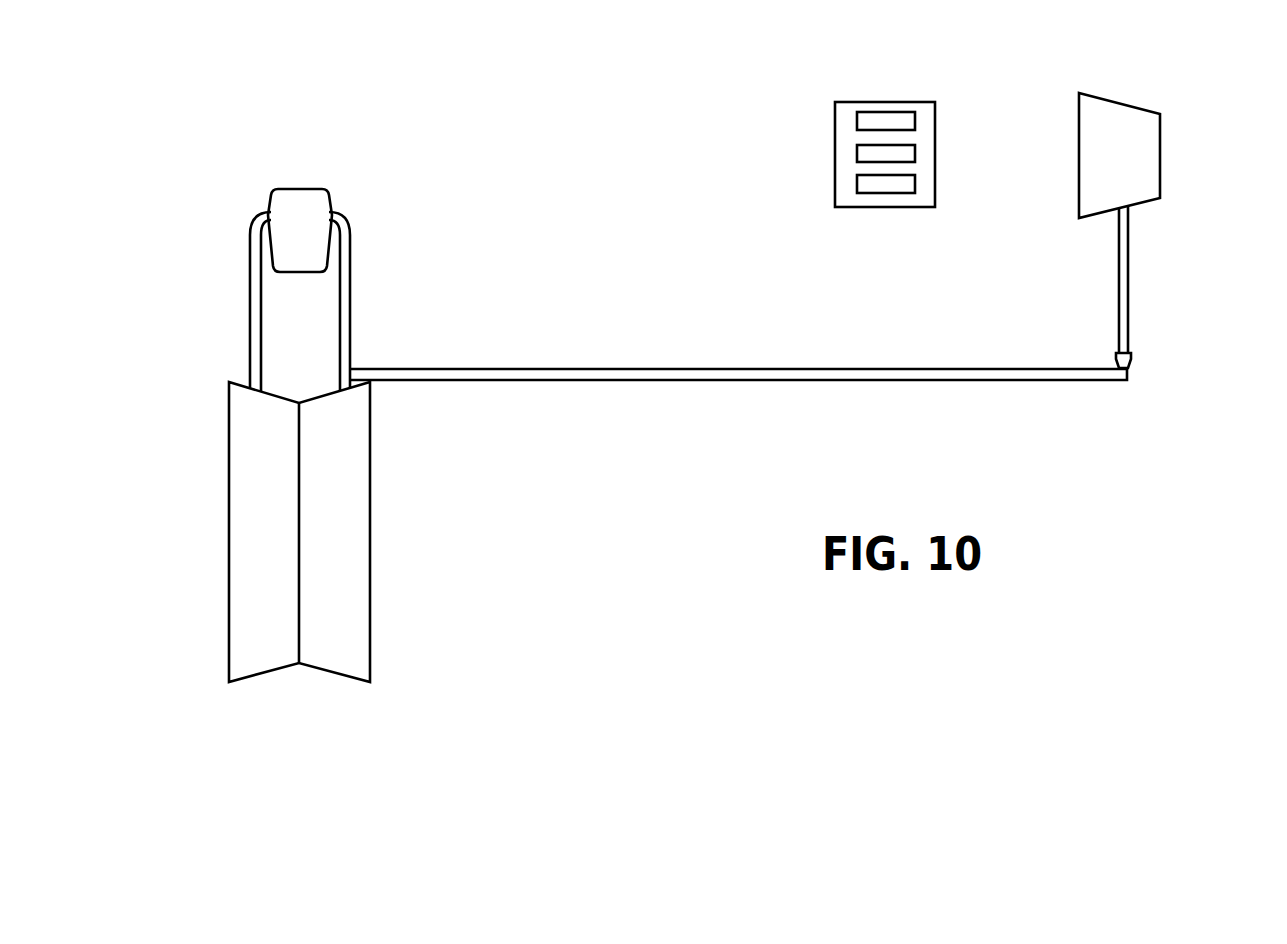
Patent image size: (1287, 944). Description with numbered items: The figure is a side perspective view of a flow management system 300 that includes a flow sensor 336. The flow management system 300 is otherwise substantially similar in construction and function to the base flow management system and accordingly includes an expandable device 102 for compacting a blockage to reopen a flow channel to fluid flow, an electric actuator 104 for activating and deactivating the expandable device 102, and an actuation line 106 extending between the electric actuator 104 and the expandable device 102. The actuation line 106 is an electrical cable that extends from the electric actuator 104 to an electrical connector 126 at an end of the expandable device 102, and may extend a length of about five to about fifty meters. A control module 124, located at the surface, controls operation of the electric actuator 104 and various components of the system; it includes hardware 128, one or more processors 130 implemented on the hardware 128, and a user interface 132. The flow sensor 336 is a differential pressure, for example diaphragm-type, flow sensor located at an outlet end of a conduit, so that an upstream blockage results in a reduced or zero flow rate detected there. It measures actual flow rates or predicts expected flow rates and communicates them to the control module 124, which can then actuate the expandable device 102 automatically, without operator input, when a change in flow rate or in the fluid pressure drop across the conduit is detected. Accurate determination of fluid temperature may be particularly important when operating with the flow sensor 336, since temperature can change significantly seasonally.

The flow management system 300 is at (530, 126).
The flow sensor 336 is at (233, 279).
The expandable device 102 is at (773, 368).
The electric actuator 104 is at (1160, 150).
The actuation line 106 is at (1128, 267).
The electrical connector 126 is at (1132, 362).
The control module 124 is at (935, 105).
The hardware 128 is at (857, 122).
The processors 130 is at (857, 155).
The user interface 132 is at (857, 182).